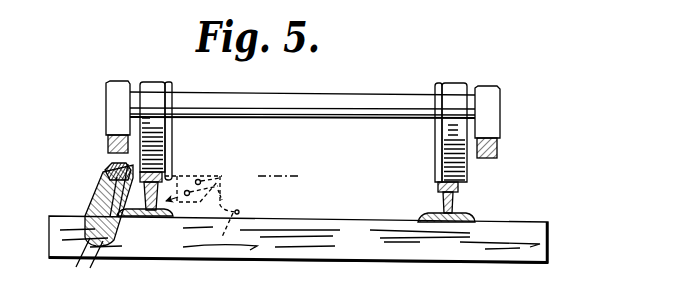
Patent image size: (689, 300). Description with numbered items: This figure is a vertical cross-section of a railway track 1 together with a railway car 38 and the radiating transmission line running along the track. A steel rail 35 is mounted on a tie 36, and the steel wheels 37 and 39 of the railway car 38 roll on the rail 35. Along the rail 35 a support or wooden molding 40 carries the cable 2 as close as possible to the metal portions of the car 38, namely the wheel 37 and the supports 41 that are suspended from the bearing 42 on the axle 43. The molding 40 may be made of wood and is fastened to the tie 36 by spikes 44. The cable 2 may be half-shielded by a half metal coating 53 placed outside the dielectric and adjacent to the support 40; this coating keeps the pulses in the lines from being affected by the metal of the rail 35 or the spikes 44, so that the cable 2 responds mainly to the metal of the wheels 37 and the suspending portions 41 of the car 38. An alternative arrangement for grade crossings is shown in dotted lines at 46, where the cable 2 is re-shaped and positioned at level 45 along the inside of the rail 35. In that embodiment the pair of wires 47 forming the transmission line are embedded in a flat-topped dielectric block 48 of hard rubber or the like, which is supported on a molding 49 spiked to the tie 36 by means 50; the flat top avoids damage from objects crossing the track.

The railway track 1 is at (328, 208).
The cable 2 is at (92, 187).
The steel rail 35 is at (143, 215).
The tie 36 is at (197, 263).
The steel wheel 37 is at (170, 140).
The railway car 38 is at (243, 90).
The steel wheel 39 is at (437, 150).
The support or wooden molding 40 is at (96, 192).
The supports 41 is at (108, 137).
The bearing 42 is at (106, 88).
The axle 43 is at (258, 117).
The spikes 44 is at (84, 264).
The level 45 is at (176, 175).
The dotted-line embodiment 46 is at (222, 173).
The pair of wires 47 is at (222, 176).
The dielectric block 48 is at (199, 174).
The molding 49 is at (225, 198).
The spiking means 50 is at (239, 211).
The half metal coating 53 is at (102, 175).